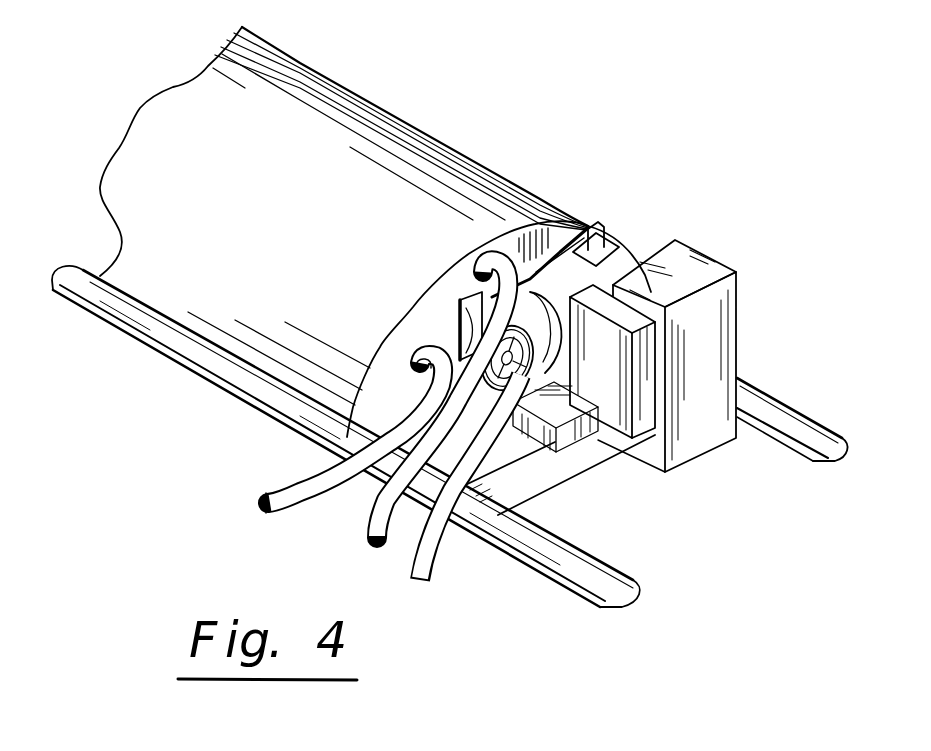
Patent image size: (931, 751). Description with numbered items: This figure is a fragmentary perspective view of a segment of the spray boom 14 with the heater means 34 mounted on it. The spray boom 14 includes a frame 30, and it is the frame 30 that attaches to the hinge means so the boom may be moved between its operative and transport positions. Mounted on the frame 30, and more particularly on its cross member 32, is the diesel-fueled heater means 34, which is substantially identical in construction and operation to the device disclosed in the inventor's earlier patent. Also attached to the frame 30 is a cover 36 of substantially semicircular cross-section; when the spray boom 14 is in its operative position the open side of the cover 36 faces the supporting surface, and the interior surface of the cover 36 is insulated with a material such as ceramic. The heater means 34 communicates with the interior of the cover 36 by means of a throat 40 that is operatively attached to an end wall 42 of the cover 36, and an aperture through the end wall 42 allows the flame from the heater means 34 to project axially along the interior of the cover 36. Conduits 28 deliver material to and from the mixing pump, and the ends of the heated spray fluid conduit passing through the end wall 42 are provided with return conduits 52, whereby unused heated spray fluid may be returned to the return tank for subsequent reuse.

The spray boom 14 is at (473, 141).
The conduits 28 is at (372, 535).
The frame 30 is at (257, 408).
The cross member 32 is at (553, 486).
The heater means 34 is at (633, 232).
The cover 36 is at (243, 234).
The throat 40 is at (468, 297).
The end wall 42 is at (438, 345).
The return conduits 52 is at (322, 491).